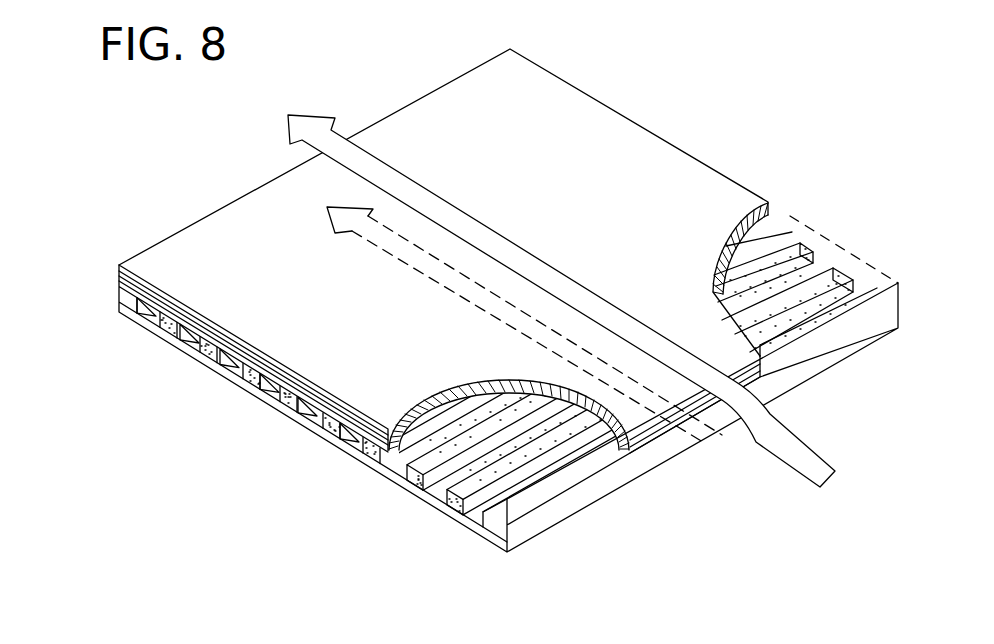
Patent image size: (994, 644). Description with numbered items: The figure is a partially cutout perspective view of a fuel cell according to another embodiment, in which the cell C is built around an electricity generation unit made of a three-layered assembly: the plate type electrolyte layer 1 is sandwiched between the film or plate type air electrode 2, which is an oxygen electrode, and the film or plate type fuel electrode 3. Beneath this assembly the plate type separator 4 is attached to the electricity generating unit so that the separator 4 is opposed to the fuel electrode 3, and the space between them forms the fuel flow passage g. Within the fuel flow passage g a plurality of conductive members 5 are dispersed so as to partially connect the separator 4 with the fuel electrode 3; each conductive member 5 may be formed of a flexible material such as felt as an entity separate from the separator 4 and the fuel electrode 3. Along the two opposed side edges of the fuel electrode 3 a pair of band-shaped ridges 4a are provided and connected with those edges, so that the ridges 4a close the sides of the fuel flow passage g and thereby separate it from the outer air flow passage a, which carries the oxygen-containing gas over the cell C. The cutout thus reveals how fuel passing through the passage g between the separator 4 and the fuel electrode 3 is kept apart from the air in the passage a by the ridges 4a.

The cell C is at (697, 148).
The outer air flow passage a is at (338, 133).
The fuel flow passage g is at (267, 393).
The separator 4 is at (596, 501).
The band-shaped ridges 4a is at (126, 297).
The conductive members 5 is at (200, 350).
The fuel electrode 3 is at (313, 393).
The electrolyte layer 1 is at (348, 410).
The air electrode 2 is at (388, 425).